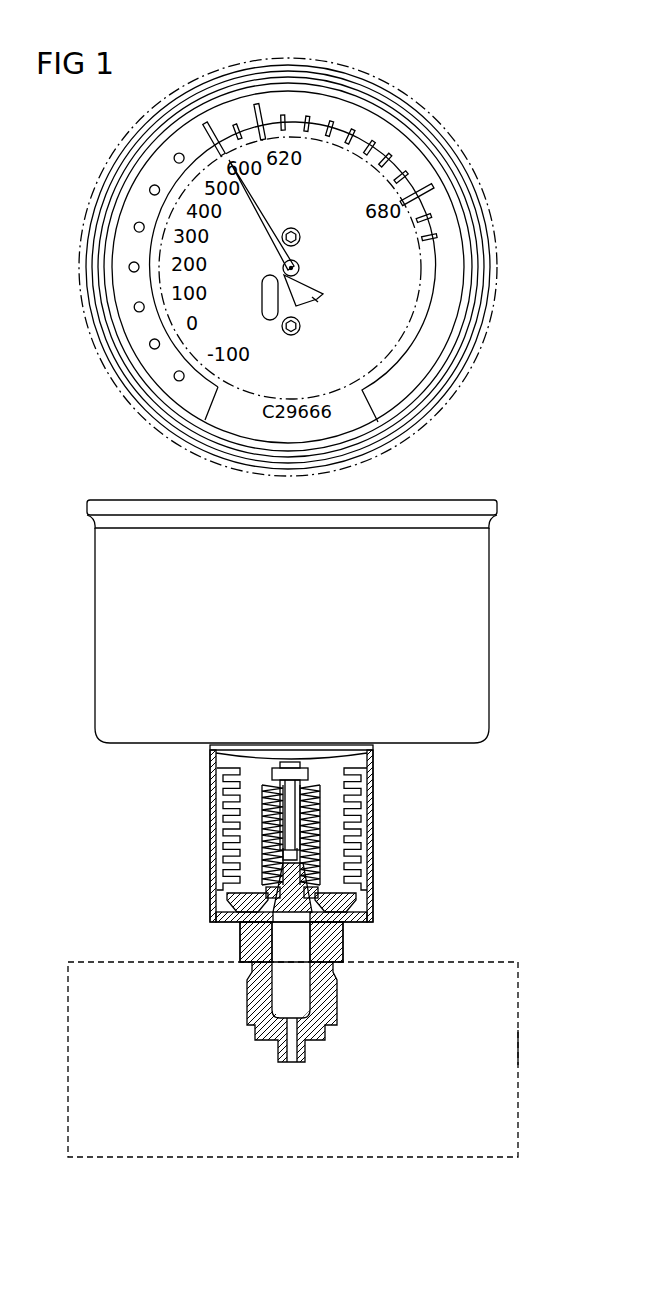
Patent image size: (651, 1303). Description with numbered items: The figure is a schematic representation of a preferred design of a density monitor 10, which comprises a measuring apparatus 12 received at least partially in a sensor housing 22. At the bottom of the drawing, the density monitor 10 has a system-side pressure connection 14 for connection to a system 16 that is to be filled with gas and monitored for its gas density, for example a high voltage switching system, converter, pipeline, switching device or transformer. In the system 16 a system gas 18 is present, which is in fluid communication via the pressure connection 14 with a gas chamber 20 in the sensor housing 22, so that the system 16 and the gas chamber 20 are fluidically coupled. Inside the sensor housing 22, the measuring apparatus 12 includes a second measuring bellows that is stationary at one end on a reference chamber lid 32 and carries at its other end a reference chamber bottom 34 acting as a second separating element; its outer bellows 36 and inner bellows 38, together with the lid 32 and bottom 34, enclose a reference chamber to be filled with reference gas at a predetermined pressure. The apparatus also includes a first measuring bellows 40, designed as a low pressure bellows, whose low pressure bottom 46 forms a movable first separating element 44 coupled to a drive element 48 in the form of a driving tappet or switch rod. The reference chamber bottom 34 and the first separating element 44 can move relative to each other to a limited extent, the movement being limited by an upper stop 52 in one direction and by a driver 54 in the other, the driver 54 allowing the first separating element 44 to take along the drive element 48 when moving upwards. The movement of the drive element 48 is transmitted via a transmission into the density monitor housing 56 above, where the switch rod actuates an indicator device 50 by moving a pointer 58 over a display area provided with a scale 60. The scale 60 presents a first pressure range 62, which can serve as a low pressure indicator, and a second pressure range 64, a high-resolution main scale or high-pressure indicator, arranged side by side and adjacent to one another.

The density monitor 10 is at (518, 150).
The measuring apparatus 12 is at (148, 822).
The system-side pressure connection 14 is at (240, 935).
The system 16 is at (516, 1092).
The system gas 18 is at (505, 1045).
The gas chamber 20 is at (355, 912).
The sensor housing 22 is at (358, 895).
The reference chamber lid 32 is at (366, 762).
The reference chamber bottom 34 is at (235, 895).
The outer bellows 36 is at (362, 812).
The inner bellows 38 is at (325, 835).
The first measuring bellows 40 is at (265, 815).
The first separating element 44 is at (322, 872).
The low pressure bottom 46 is at (266, 880).
The drive element 48 is at (290, 775).
The indicator device 50 is at (505, 280).
The upper stop 52 is at (325, 915).
The driver 54 is at (292, 900).
The density monitor housing 56 is at (478, 636).
The pointer 58 is at (310, 298).
The scale 60 is at (402, 322).
The first pressure range 62 is at (97, 188).
The second pressure range 64 is at (432, 104).